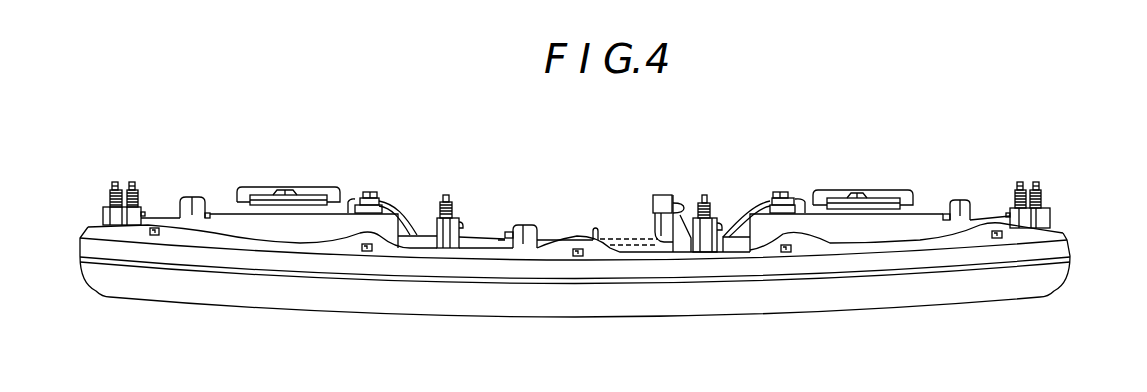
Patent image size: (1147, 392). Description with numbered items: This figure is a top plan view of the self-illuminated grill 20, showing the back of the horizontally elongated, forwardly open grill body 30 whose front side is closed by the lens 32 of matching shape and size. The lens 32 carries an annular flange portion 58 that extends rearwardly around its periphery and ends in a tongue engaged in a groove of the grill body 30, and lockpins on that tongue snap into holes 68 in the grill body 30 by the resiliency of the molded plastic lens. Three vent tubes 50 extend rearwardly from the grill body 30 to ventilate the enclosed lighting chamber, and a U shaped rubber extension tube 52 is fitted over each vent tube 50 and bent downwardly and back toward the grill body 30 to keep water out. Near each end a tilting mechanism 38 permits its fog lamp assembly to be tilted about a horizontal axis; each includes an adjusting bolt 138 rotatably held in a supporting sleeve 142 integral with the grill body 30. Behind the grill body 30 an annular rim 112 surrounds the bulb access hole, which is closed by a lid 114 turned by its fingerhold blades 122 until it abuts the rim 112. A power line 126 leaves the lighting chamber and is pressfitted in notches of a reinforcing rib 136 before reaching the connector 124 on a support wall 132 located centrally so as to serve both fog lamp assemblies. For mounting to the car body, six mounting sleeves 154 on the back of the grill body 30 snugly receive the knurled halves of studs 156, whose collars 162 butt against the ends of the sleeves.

The self-illuminated grill 20 is at (1099, 137).
The grill body 30 is at (577, 234).
The lens 32 is at (649, 314).
The tilting mechanism 38 is at (396, 200).
The vent tube 50 is at (208, 216).
The extension tube 52 is at (194, 199).
The flange portion 58 is at (78, 247).
The hole 68 is at (154, 236).
The annular rim 112 is at (313, 195).
The lid 114 is at (287, 191).
The fingerhold blades 122 is at (327, 196).
The connector 124 is at (657, 195).
The power line 126 is at (352, 197).
The support wall 132 is at (678, 203).
The reinforcing rib 136 is at (596, 227).
The adjusting bolt 138 is at (374, 193).
The supporting sleeve 142 is at (410, 200).
The mounting sleeve 154 is at (100, 210).
The stud 156 is at (113, 187).
The collar 162 is at (104, 207).